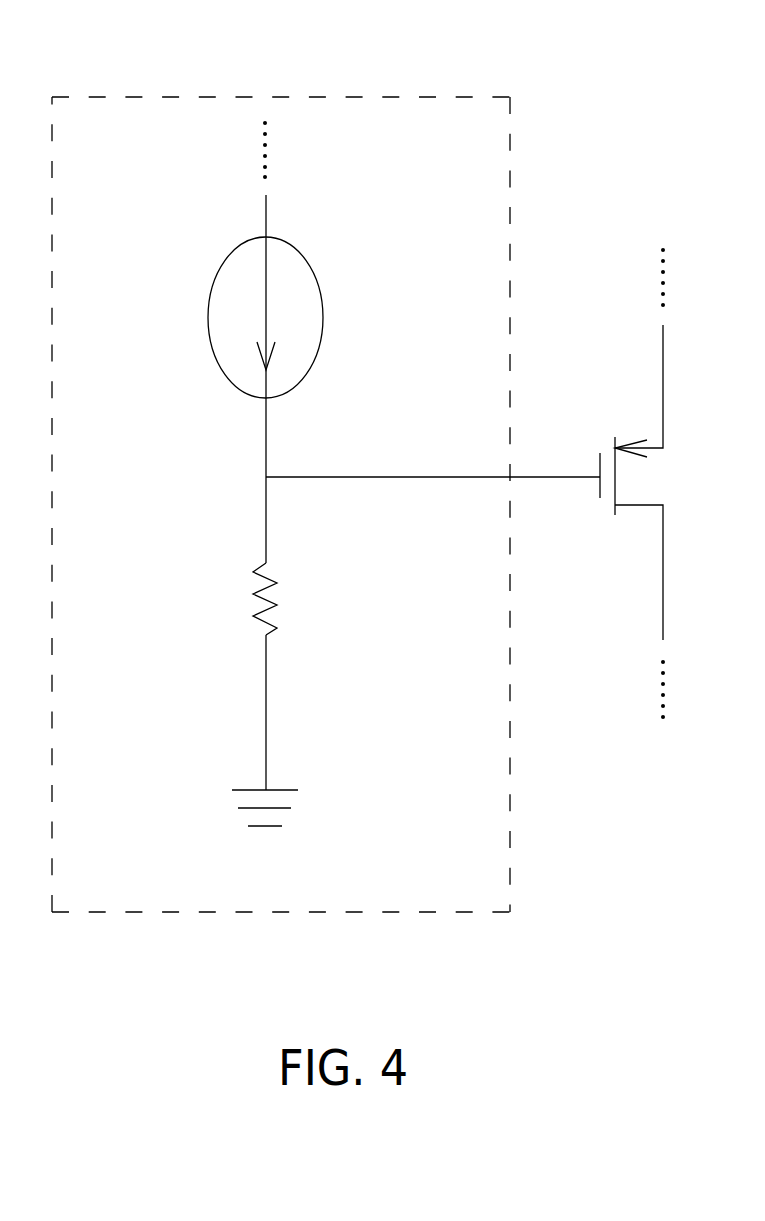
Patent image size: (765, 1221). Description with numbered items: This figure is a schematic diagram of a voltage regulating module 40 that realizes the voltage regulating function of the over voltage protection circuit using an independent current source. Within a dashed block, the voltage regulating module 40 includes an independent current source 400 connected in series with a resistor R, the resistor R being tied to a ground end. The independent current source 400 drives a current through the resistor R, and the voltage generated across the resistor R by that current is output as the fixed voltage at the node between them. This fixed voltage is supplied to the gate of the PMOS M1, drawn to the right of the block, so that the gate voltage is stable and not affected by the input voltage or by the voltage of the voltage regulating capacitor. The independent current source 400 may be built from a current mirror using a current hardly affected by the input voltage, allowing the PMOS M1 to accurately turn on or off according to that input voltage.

The voltage regulating module 40 is at (326, 464).
The independent current source 400 is at (323, 317).
The PMOS M1 is at (637, 522).
The resistor R is at (293, 599).